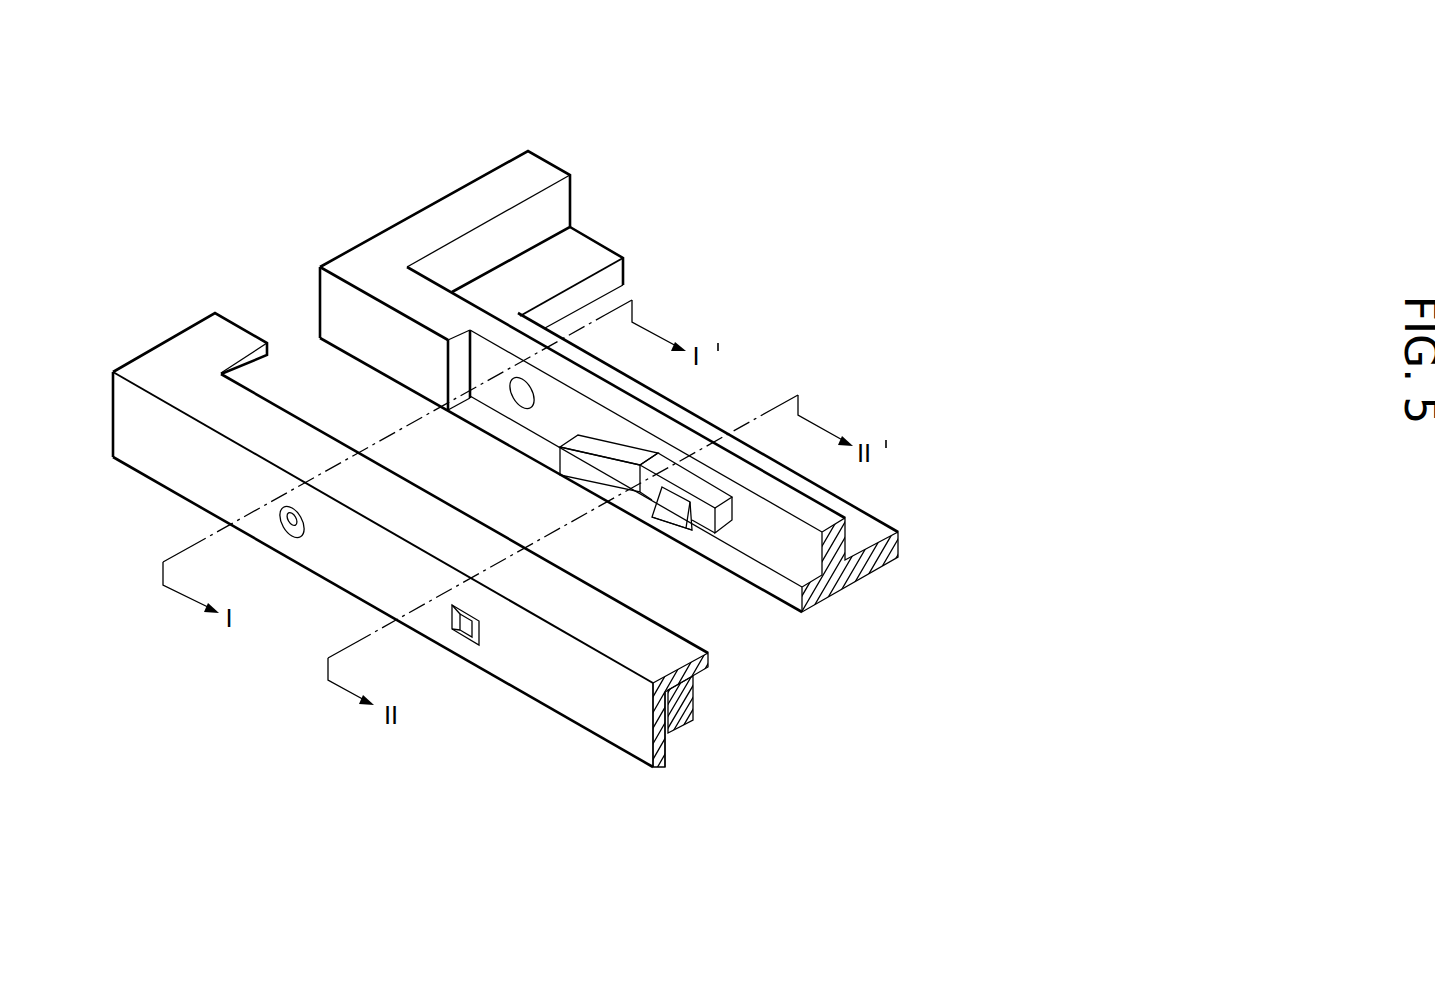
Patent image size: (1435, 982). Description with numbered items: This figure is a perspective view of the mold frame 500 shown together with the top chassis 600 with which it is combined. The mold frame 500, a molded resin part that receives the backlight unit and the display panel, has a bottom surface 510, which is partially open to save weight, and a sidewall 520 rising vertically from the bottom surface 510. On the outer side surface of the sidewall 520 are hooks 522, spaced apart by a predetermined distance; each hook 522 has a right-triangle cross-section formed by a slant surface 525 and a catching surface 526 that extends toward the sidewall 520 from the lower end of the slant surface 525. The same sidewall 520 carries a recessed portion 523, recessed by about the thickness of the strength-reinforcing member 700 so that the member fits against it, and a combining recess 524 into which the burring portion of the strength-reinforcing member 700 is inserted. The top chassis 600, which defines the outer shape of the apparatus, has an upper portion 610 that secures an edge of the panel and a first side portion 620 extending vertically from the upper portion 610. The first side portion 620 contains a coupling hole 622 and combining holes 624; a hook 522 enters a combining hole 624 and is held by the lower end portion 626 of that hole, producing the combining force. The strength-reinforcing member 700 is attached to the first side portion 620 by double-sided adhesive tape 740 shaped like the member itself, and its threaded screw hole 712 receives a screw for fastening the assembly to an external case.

The mold frame 500 is at (582, 152).
The bottom surface 510 is at (597, 252).
The sidewall 520 is at (368, 312).
The hook 522 is at (640, 502).
The recessed portion 523 is at (545, 435).
The combining recess 524 is at (516, 392).
The slant surface 525 is at (667, 515).
The catching surface 526 is at (682, 537).
The top chassis 600 is at (235, 288).
The upper portion 610 is at (163, 358).
The first side portion 620 is at (555, 690).
The coupling hole 622 is at (307, 524).
The combining hole 624 is at (457, 620).
The lower end portion 626 is at (463, 637).
The strength-reinforcing member 700 is at (712, 694).
The screw hole 712 is at (283, 528).
The double-sided adhesive tape 740 is at (672, 703).